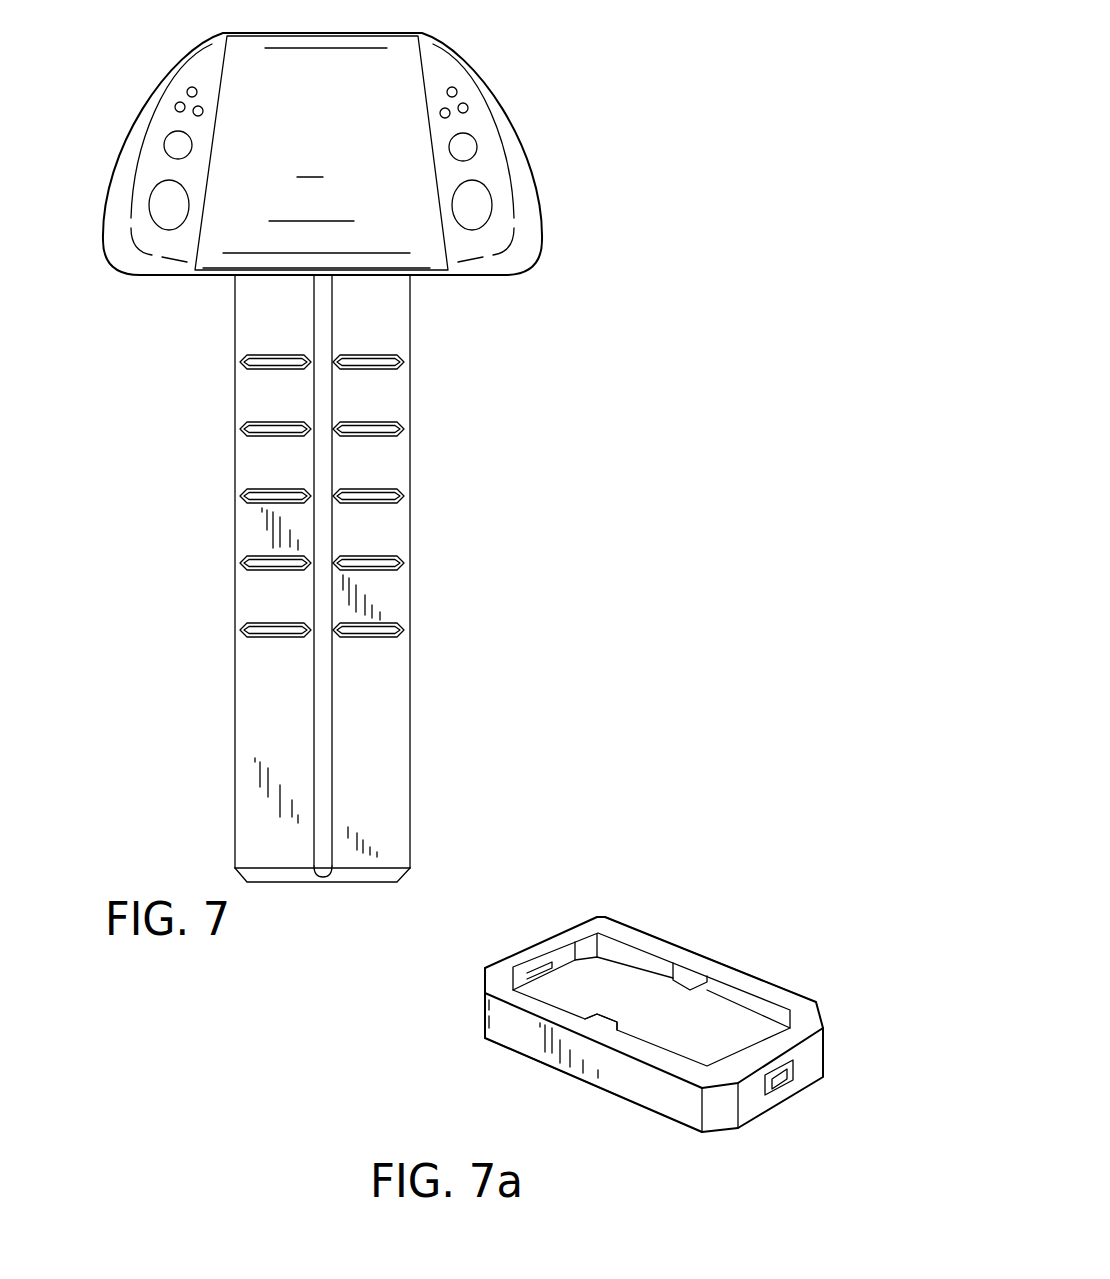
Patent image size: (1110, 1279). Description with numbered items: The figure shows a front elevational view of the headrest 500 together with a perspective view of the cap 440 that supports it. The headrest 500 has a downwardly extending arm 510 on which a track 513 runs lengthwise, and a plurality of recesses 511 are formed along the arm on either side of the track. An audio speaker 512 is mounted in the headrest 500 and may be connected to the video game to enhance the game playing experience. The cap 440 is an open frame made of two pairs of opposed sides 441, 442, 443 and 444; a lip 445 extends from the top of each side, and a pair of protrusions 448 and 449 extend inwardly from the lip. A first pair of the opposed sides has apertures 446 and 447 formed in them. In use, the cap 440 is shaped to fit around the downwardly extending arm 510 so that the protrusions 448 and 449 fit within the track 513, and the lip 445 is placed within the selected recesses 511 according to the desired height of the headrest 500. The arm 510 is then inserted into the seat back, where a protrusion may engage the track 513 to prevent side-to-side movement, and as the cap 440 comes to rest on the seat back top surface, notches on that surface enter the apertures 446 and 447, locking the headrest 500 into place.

In FIG. 7, the headrest 500 is at (647, 133).
In FIG. 7, the downwardly extending arm 510 is at (450, 540).
In FIG. 7, the recesses 511 is at (275, 418).
In FIG. 7, the audio speaker 512 is at (158, 187).
In FIG. 7, the track 513 is at (320, 765).
In FIG. 7A, the cap 440 is at (795, 948).
In FIG. 7A, the side 441 is at (777, 1112).
In FIG. 7A, the side 442 is at (548, 1052).
In FIG. 7A, the side 443 is at (542, 928).
In FIG. 7A, the side 444 is at (757, 975).
In FIG. 7A, the lip 445 is at (485, 985).
In FIG. 7A, the aperture 446 is at (546, 960).
In FIG. 7A, the aperture 447 is at (790, 1080).
In FIG. 7A, the protrusion 448 is at (690, 972).
In FIG. 7A, the protrusion 449 is at (607, 1022).